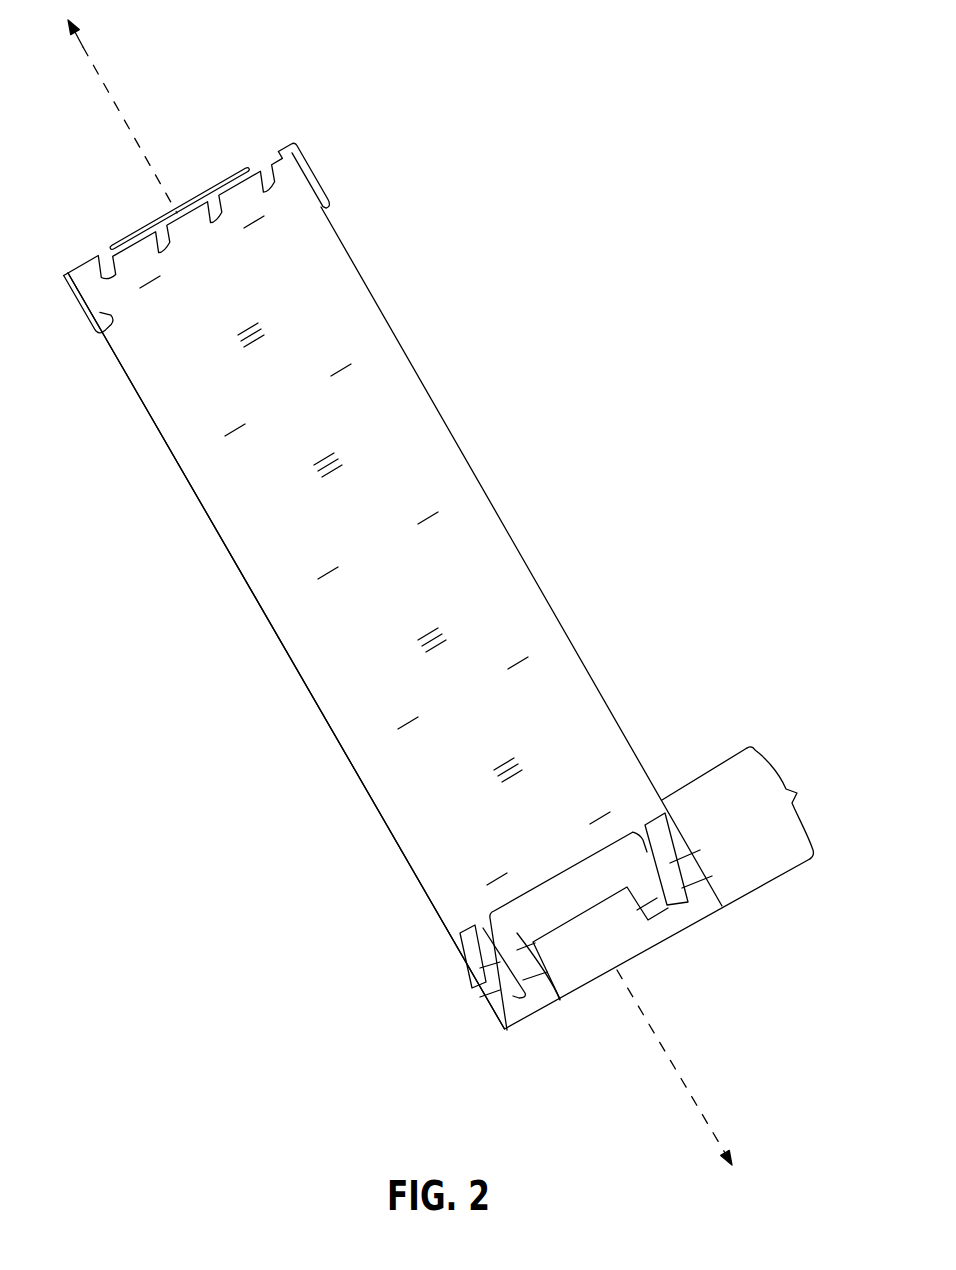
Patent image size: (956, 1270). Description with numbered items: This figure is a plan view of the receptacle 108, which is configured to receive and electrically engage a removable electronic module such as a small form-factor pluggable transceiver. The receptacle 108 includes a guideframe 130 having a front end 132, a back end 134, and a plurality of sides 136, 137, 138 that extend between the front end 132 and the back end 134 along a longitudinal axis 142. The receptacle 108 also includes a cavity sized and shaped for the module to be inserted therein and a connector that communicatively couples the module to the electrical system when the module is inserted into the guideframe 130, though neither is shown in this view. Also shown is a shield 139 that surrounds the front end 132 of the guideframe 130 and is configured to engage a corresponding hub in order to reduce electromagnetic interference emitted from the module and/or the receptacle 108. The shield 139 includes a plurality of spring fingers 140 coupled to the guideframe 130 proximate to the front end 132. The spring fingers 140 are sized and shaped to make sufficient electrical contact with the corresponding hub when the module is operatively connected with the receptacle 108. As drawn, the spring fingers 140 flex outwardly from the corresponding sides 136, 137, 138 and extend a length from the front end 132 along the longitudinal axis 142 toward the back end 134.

The receptacle 108 is at (440, 135).
The guideframe 130 is at (328, 275).
The front end 132 is at (688, 984).
The back end 134 is at (207, 130).
The side 136 is at (263, 303).
The side 137 is at (430, 342).
The side 138 is at (155, 494).
The shield 139 is at (695, 918).
The spring fingers 140 is at (690, 830).
The longitudinal axis 142 is at (109, 91).